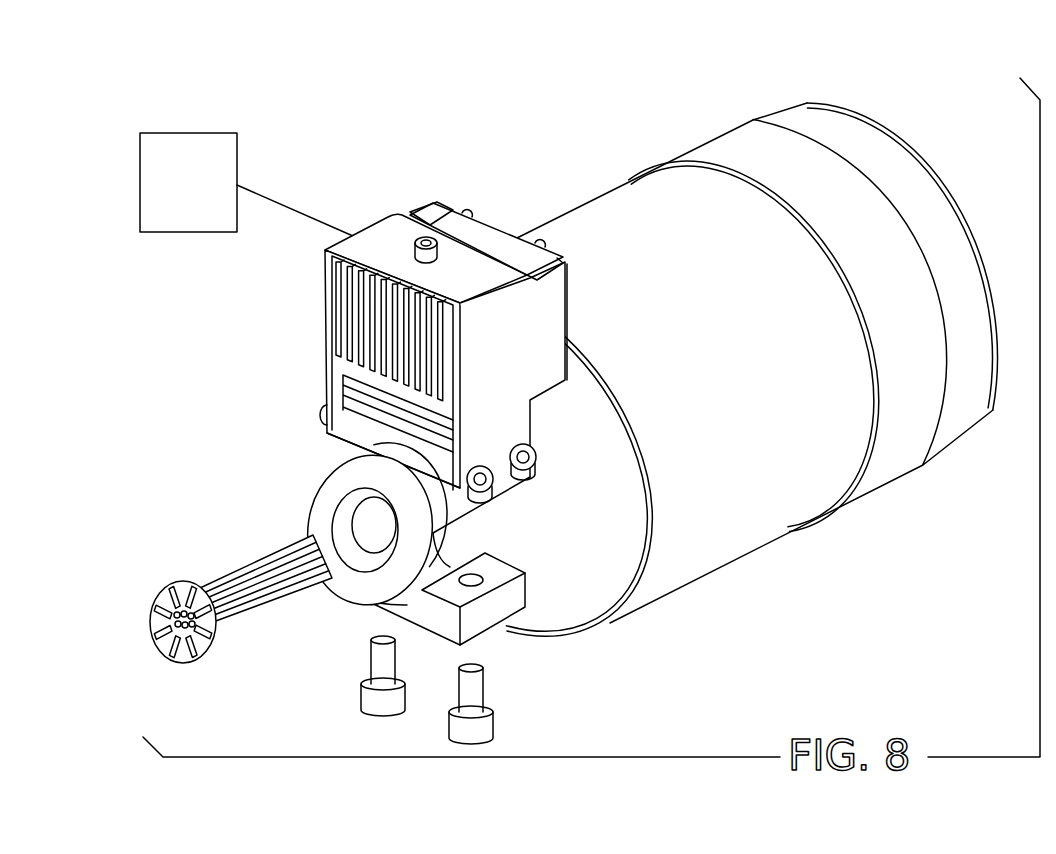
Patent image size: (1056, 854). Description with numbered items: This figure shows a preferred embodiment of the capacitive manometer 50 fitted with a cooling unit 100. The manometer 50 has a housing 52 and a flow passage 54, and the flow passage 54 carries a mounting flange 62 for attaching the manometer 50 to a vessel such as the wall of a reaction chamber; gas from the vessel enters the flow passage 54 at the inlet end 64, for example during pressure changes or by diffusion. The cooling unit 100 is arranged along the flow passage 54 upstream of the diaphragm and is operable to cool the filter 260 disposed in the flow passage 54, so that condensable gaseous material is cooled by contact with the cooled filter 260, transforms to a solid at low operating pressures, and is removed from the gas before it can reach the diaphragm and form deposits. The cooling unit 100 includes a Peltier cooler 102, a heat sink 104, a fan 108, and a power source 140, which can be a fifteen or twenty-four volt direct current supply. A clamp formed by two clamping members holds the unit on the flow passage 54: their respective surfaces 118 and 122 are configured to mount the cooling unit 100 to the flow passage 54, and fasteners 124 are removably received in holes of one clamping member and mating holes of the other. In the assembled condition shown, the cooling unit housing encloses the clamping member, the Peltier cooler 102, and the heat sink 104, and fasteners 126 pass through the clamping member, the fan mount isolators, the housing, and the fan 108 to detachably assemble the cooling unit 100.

The capacitive manometer 50 is at (645, 103).
The housing 52 is at (707, 573).
The flow passage 54 is at (497, 505).
The mounting flange 62 is at (335, 524).
The inlet end 64 is at (337, 525).
The cooling unit 100 is at (387, 294).
The Peltier cooler 102 is at (347, 378).
The heat sink 104 is at (342, 282).
The fan 108 is at (493, 240).
The surface 118 is at (347, 423).
The surface 122 is at (482, 618).
The fasteners 124 is at (494, 714).
The fasteners 126 is at (537, 452).
The power source 140 is at (187, 133).
The filter 260 is at (258, 610).